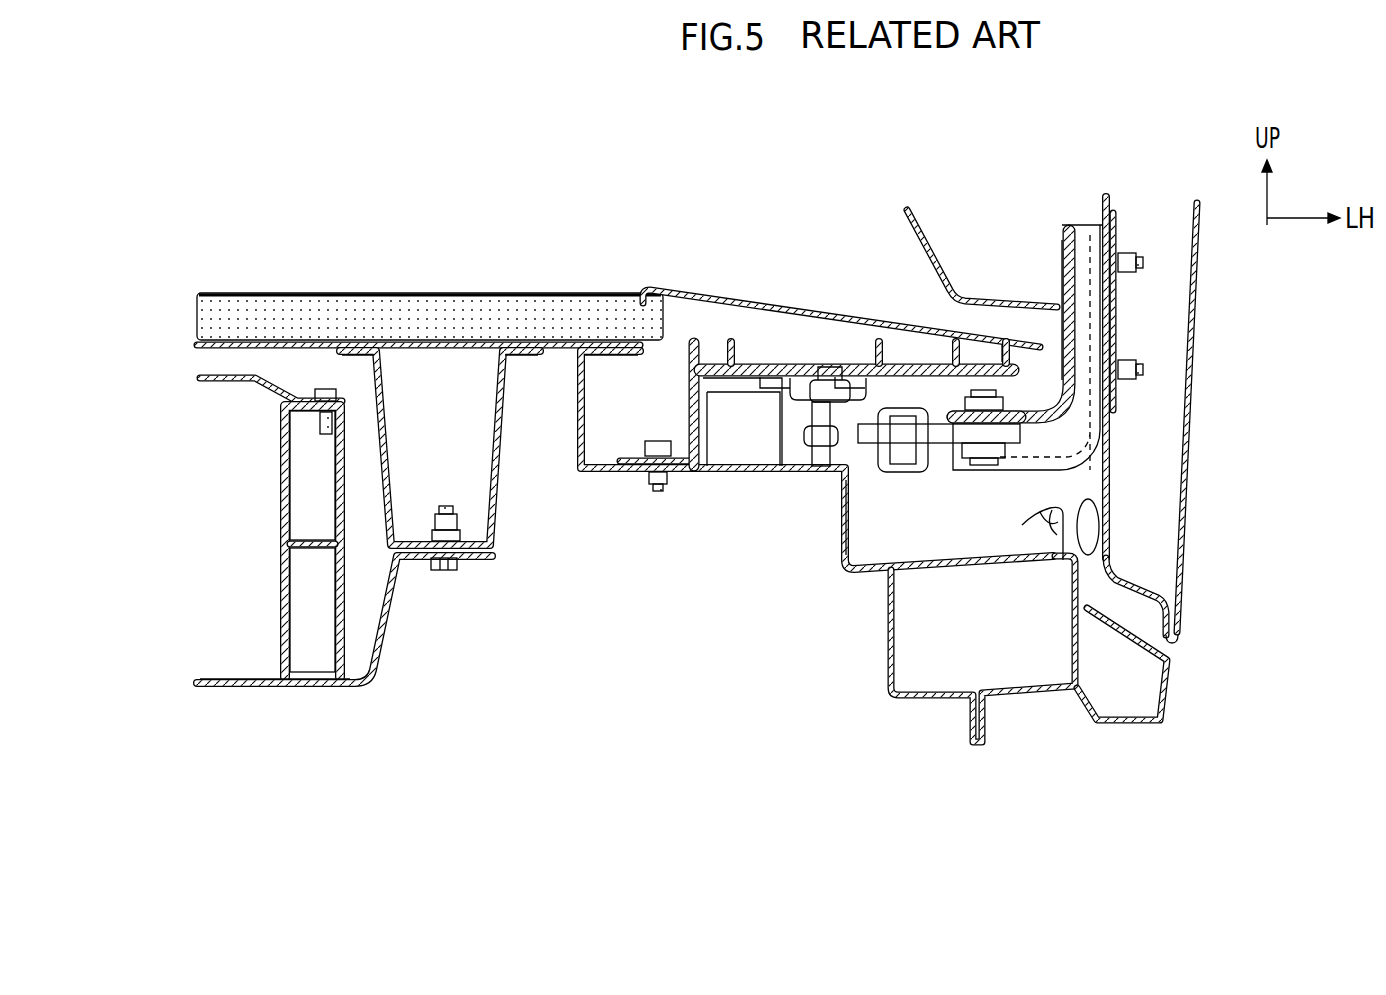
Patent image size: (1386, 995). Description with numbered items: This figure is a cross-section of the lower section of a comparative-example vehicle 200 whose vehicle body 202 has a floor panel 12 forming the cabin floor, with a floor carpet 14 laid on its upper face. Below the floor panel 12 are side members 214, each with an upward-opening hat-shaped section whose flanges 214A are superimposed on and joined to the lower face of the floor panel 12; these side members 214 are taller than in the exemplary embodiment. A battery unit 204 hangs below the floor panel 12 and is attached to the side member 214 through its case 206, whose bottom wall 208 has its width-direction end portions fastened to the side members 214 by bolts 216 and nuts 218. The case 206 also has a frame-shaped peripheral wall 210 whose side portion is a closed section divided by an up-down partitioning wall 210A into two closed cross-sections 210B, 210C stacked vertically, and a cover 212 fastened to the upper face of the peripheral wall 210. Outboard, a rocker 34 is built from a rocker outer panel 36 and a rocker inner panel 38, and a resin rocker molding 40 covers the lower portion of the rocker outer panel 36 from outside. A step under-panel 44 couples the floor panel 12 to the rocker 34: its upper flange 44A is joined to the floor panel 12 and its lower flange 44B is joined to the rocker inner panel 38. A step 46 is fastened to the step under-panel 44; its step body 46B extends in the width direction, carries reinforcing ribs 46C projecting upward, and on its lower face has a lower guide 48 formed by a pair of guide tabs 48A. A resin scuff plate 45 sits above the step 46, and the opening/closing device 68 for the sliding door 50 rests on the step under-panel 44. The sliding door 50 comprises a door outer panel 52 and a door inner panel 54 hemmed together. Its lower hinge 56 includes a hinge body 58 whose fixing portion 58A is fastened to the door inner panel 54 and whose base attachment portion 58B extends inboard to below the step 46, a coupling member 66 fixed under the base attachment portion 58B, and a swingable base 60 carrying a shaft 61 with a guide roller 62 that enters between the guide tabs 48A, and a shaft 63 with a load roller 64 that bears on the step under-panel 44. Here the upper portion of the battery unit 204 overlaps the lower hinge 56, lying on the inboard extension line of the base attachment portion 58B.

The floor panel 12 is at (235, 347).
The floor carpet 14 is at (300, 291).
The rocker 34 is at (925, 720).
The rocker outer panel 36 is at (1110, 705).
The rocker inner panel 38 is at (885, 655).
The rocker molding 40 is at (1170, 683).
The step under-panel 44 is at (584, 478).
The upper flange 44A is at (612, 350).
The lower flange 44B is at (880, 575).
The scuff plate 45 is at (658, 290).
The step 46 is at (755, 357).
The step body 46B is at (903, 358).
The reinforcing ribs 46C is at (983, 360).
The lower guide 48 is at (813, 292).
The guide tabs 48A is at (775, 385).
The sliding door 50 is at (1220, 450).
The door outer panel 52 is at (1192, 280).
The door inner panel 54 is at (1112, 320).
The lower hinge 56 is at (1040, 237).
The hinge body 58 is at (1087, 223).
The fixing portion 58A is at (1065, 290).
The base attachment portion 58B is at (990, 470).
The base 60 is at (892, 472).
The shaft 61 is at (790, 418).
The guide roller 62 is at (815, 390).
The shaft 63 is at (830, 458).
The load roller 64 is at (808, 450).
The coupling member 66 is at (938, 445).
The opening/closing device 68 is at (716, 405).
The vehicle 200 is at (1243, 409).
The vehicle body 202 is at (447, 213).
The battery unit 204 is at (365, 700).
The case 206 is at (218, 690).
The bottom wall 208 is at (295, 690).
The peripheral wall 210 is at (280, 590).
The up-down partitioning wall 210A is at (314, 537).
The closed cross-section 210B is at (314, 460).
The closed cross-section 210C is at (314, 645).
The cover 212 is at (213, 385).
The side member 214 is at (500, 537).
The flanges 214A is at (355, 352).
The bolts 216 is at (443, 567).
The nuts 218 is at (428, 513).